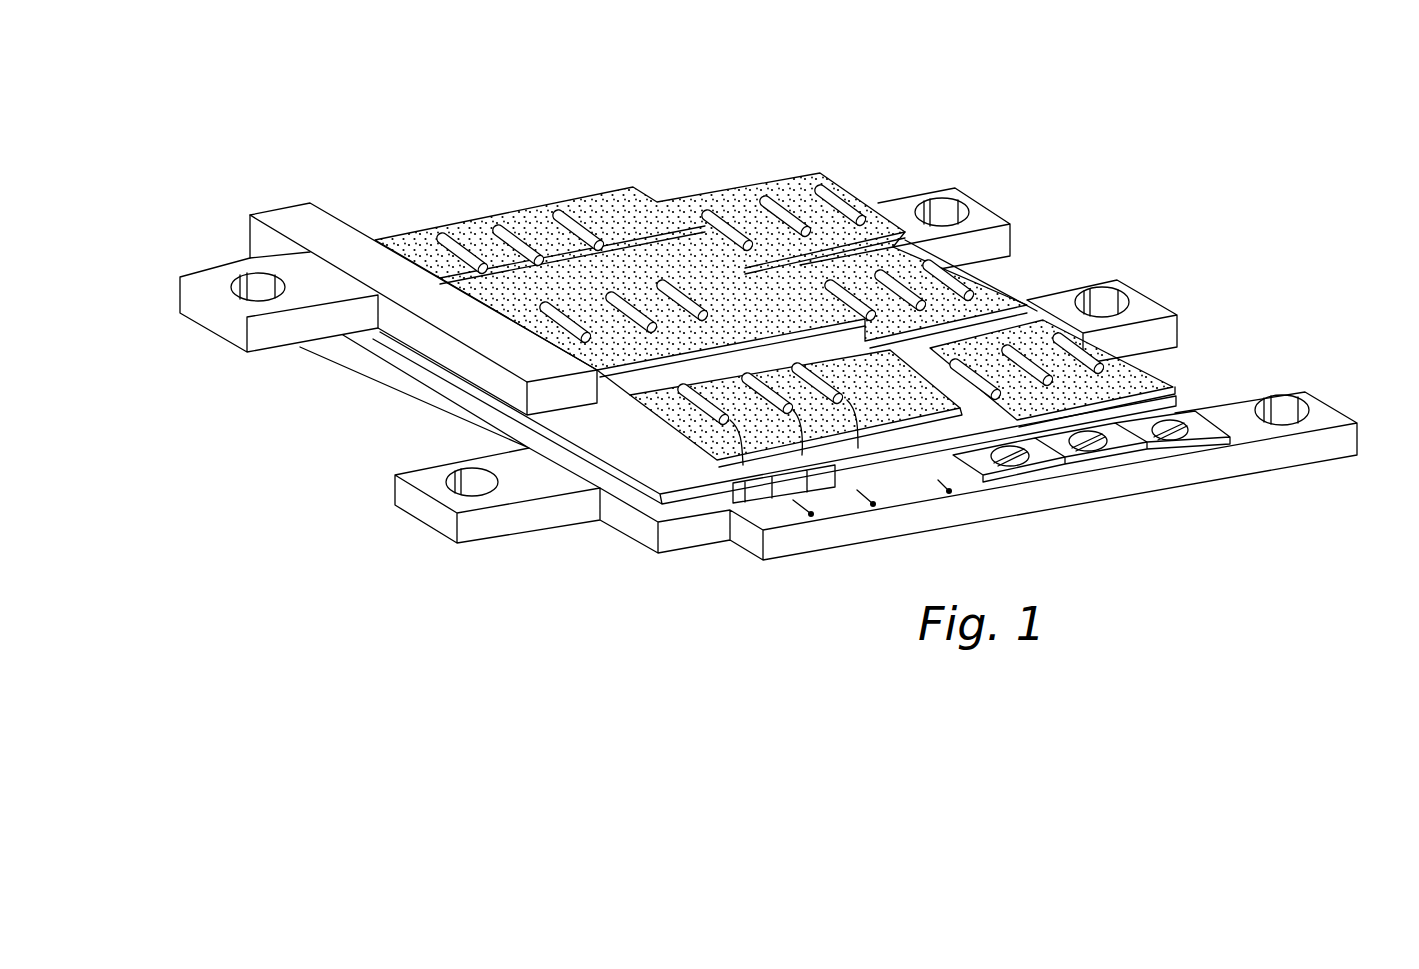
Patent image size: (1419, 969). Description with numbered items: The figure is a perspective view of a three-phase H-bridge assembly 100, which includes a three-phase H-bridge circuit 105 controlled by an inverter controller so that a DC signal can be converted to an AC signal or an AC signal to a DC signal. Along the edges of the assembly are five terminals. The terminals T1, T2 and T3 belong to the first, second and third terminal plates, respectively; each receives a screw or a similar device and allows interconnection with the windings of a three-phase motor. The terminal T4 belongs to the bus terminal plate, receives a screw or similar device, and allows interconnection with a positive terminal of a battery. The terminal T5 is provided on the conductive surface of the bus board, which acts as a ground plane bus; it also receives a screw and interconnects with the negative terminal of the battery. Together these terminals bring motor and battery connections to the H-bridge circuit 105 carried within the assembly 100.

The three-phase H-bridge assembly 100 is at (488, 569).
The three-phase H-bridge circuit 105 is at (580, 220).
The terminal T1 is at (947, 212).
The terminal T2 is at (1108, 303).
The terminal T3 is at (1287, 412).
The terminal T4 is at (475, 483).
The terminal T5 is at (263, 287).